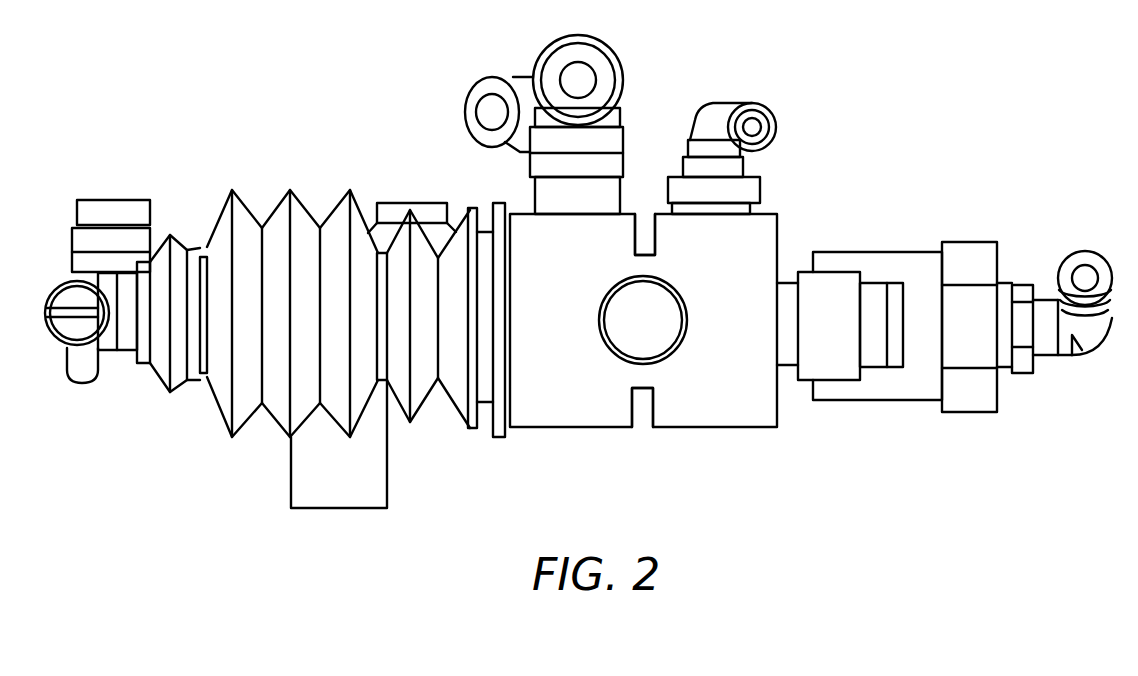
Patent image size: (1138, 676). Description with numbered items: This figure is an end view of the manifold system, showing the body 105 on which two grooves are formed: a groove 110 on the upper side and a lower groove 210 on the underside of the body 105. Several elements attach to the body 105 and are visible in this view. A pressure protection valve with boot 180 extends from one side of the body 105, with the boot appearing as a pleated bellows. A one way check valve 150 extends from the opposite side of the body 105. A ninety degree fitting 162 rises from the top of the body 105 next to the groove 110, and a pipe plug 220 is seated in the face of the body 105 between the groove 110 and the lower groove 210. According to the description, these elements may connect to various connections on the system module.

The body 105 is at (733, 262).
The groove 110 is at (642, 232).
The one way check valve 150 is at (970, 312).
The ninety degree fitting 162 is at (757, 127).
The pressure protection valve with boot 180 is at (275, 227).
The lower groove 210 is at (642, 402).
The pipe plug 220 is at (637, 323).